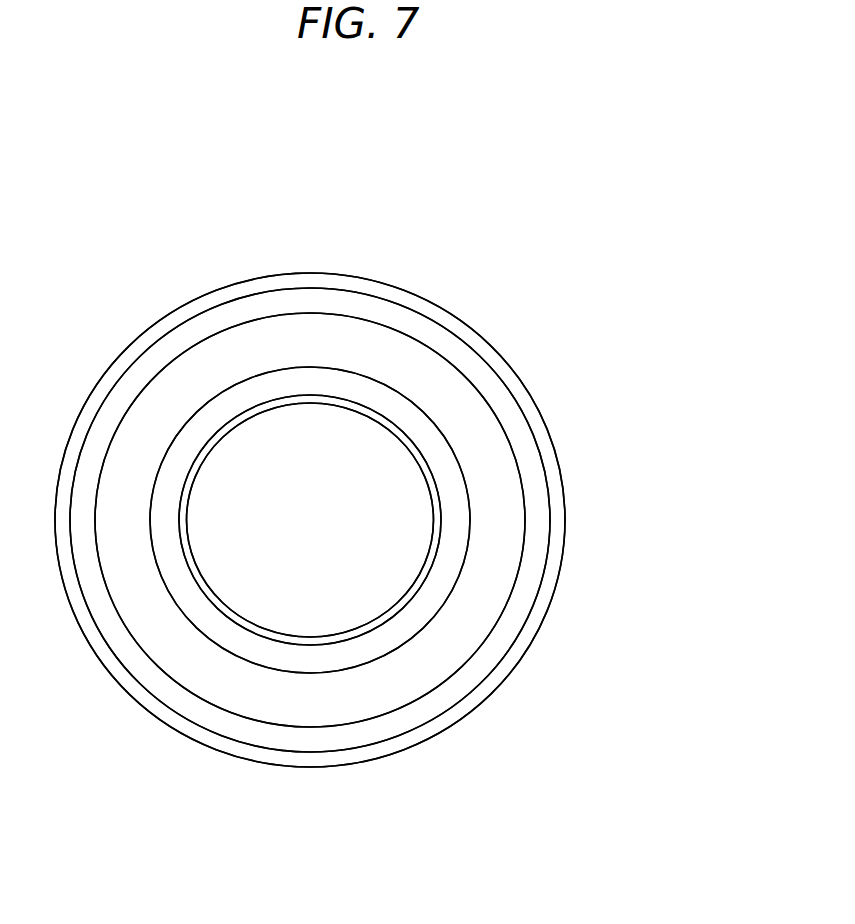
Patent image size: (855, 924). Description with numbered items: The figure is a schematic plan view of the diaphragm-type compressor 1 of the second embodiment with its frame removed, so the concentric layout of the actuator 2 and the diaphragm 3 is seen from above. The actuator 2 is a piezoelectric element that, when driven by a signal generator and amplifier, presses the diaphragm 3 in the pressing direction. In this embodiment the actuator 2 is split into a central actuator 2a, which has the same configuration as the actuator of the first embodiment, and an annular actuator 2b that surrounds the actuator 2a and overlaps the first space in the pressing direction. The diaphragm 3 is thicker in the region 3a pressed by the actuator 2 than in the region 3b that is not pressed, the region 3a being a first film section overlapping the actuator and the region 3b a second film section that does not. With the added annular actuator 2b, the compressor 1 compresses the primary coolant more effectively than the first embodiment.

The diaphragm-type compressor 1 is at (612, 172).
The actuator 2 is at (374, 478).
The actuator 2a is at (318, 523).
The annular actuator 2b is at (370, 352).
The diaphragm 3 is at (313, 272).
The region pressed by the actuator 3a is at (207, 457).
The region not pressed by the actuator 3b is at (203, 328).